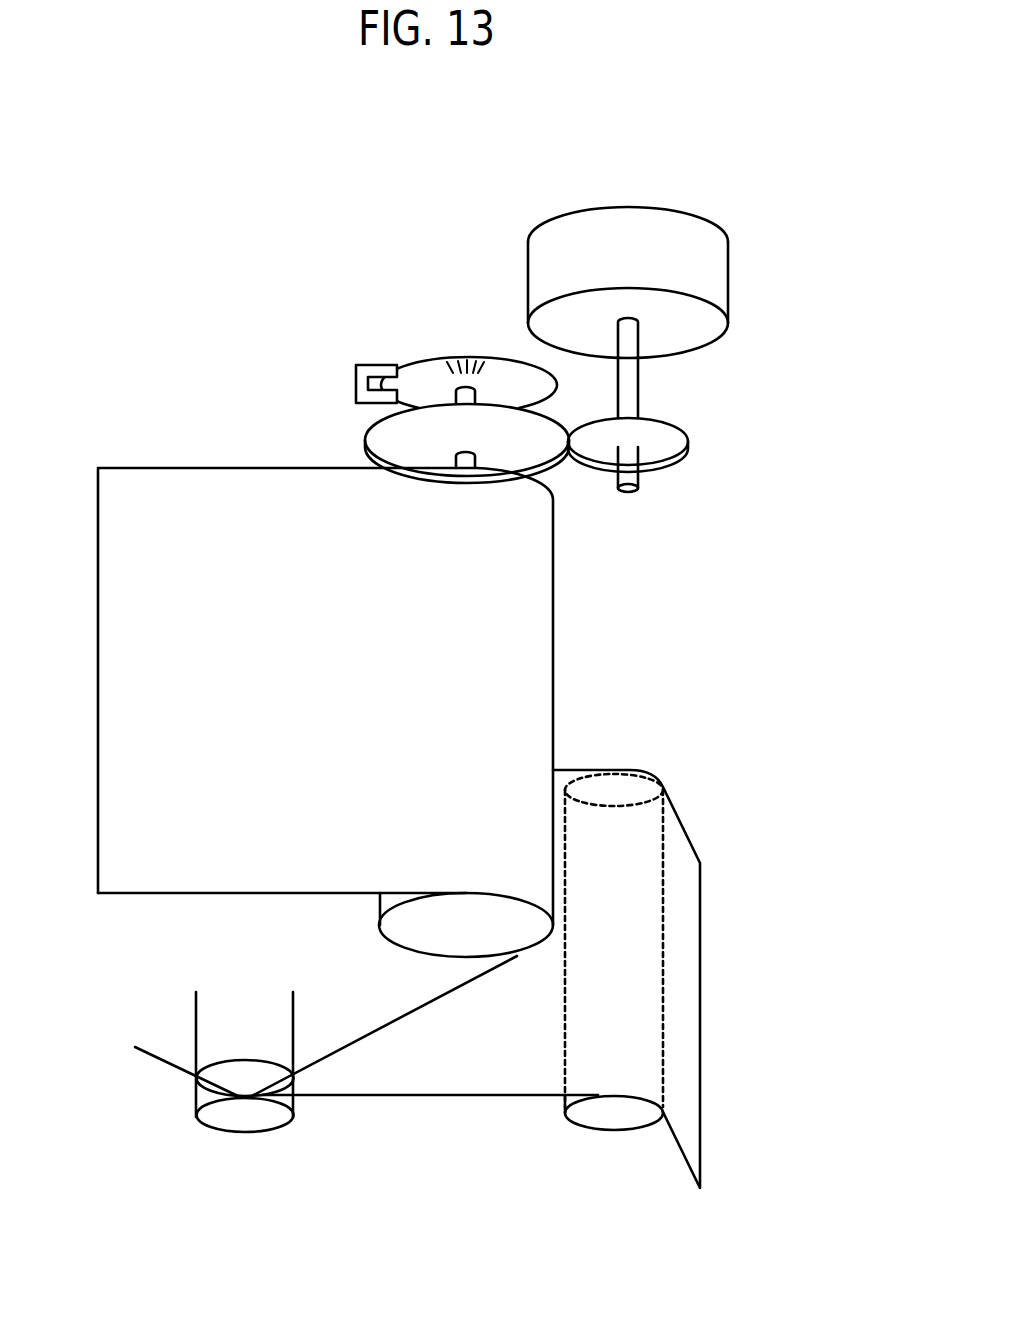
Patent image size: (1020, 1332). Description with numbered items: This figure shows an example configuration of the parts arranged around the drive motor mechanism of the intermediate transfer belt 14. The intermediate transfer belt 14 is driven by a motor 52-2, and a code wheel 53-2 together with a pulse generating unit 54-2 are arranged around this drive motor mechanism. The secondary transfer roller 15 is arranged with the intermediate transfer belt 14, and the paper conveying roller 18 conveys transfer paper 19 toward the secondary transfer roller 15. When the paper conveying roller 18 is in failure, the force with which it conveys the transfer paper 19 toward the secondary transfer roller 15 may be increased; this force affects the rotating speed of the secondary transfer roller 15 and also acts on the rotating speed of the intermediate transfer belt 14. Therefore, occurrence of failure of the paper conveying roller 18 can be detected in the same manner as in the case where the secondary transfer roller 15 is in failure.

The intermediate transfer belt 14 is at (100, 757).
The secondary transfer roller 15 is at (242, 1126).
The paper conveying roller 18 is at (613, 1125).
The transfer paper 19 is at (697, 973).
The motor 52-2 is at (723, 272).
The code wheel 53-2 is at (428, 362).
The pulse generating unit 54-2 is at (355, 387).